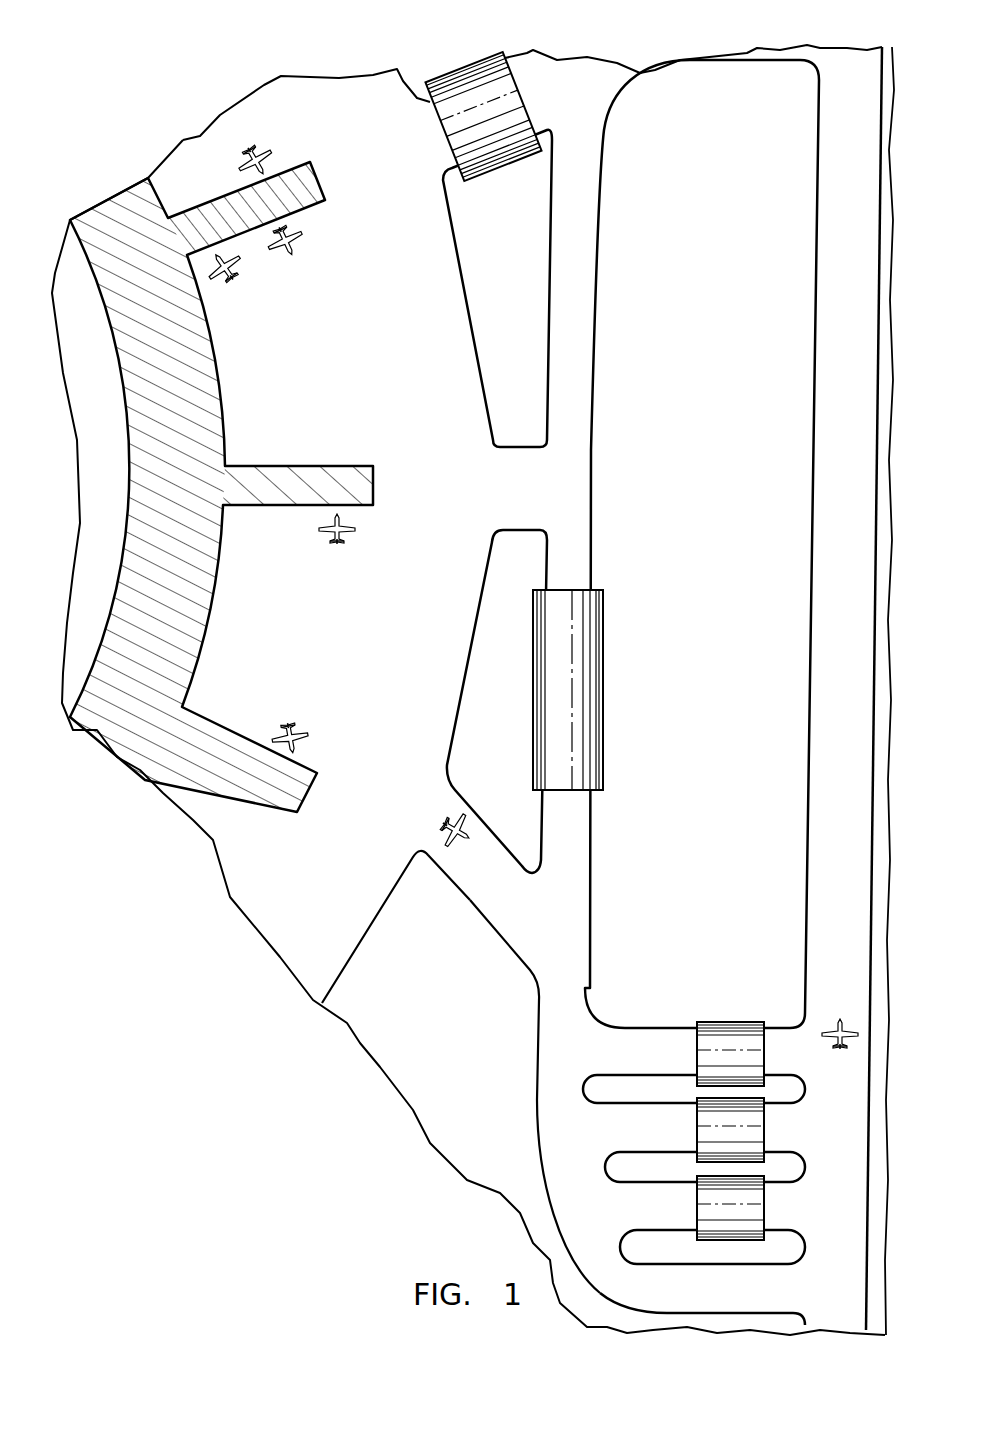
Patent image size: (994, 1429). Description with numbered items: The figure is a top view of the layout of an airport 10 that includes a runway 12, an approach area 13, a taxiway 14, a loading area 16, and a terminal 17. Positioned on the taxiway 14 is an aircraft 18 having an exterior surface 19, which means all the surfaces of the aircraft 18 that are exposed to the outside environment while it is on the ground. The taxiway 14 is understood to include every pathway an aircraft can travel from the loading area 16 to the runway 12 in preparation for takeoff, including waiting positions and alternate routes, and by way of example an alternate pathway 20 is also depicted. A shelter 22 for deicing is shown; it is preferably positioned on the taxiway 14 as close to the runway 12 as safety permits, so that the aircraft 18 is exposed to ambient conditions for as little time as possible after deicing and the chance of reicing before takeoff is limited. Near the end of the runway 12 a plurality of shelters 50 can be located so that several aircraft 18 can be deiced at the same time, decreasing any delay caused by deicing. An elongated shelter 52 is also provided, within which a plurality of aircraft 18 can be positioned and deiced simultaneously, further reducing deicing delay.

The airport 10 is at (108, 176).
The runway 12 is at (856, 513).
The approach area 13 is at (337, 808).
The taxiway 14 is at (545, 931).
The loading area 16 is at (375, 640).
The terminal 17 is at (163, 440).
The aircraft 18 is at (465, 820).
The exterior surface 19 is at (447, 845).
The alternate pathway 20 is at (707, 1297).
The shelter 22 is at (478, 102).
The plurality of shelters 50 is at (790, 1038).
The elongated shelter 52 is at (585, 693).